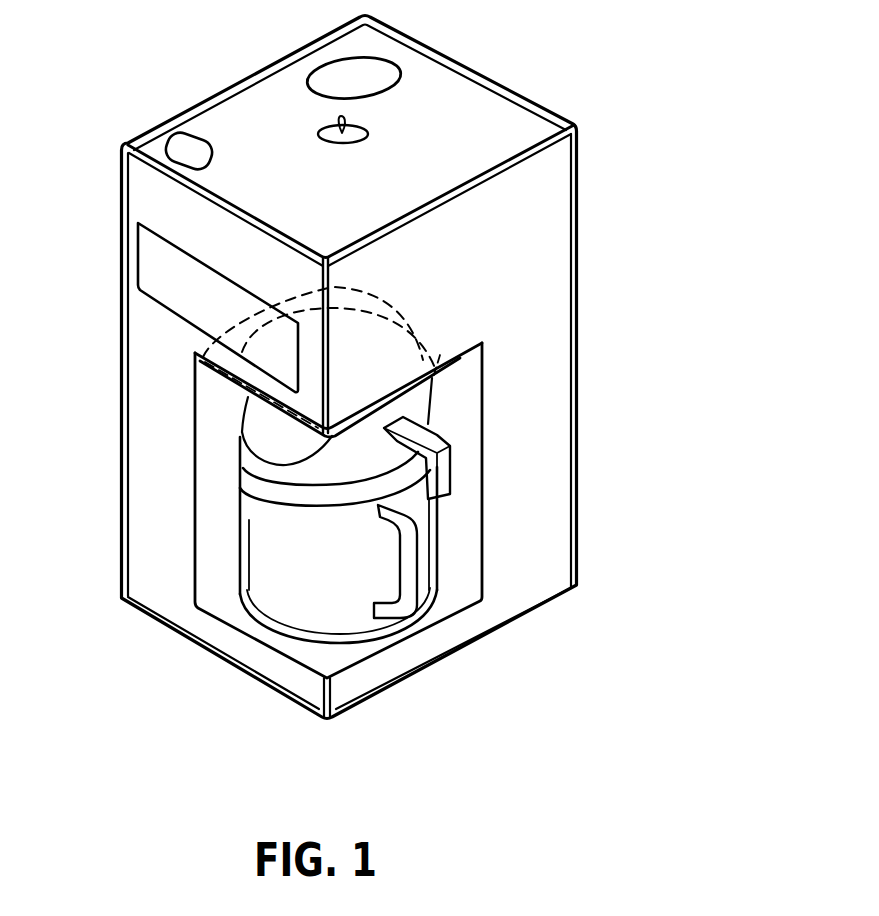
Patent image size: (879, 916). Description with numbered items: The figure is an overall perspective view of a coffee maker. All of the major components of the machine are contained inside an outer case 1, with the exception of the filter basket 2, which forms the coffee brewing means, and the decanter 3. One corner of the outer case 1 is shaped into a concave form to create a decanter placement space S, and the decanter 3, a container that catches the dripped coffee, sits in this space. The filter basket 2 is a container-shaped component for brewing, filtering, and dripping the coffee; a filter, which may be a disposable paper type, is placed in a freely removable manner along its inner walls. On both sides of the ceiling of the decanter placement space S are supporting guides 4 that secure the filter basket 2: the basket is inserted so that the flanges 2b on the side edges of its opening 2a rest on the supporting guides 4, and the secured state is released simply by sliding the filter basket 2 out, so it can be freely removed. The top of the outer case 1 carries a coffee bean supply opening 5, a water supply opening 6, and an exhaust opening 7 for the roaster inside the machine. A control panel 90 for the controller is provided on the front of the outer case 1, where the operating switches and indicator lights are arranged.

The outer case 1 is at (558, 322).
The filter basket 2 is at (287, 351).
The opening 2a is at (402, 310).
The flanges 2b is at (440, 355).
The decanter 3 is at (275, 545).
The supporting guides 4 is at (325, 438).
The coffee bean supply opening 5 is at (362, 127).
The water supply opening 6 is at (170, 136).
The exhaust opening 7 is at (382, 61).
The control panel 90 is at (138, 260).
The decanter placement space S is at (208, 499).